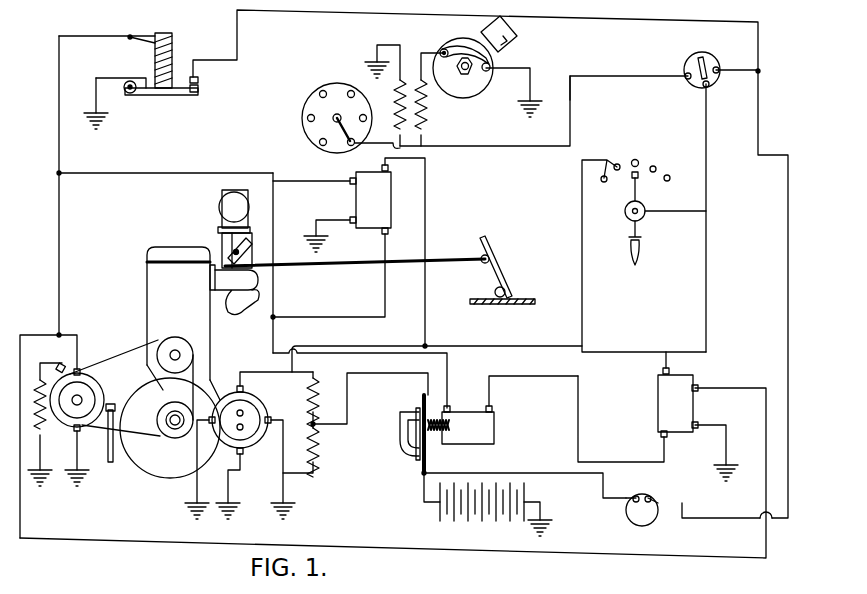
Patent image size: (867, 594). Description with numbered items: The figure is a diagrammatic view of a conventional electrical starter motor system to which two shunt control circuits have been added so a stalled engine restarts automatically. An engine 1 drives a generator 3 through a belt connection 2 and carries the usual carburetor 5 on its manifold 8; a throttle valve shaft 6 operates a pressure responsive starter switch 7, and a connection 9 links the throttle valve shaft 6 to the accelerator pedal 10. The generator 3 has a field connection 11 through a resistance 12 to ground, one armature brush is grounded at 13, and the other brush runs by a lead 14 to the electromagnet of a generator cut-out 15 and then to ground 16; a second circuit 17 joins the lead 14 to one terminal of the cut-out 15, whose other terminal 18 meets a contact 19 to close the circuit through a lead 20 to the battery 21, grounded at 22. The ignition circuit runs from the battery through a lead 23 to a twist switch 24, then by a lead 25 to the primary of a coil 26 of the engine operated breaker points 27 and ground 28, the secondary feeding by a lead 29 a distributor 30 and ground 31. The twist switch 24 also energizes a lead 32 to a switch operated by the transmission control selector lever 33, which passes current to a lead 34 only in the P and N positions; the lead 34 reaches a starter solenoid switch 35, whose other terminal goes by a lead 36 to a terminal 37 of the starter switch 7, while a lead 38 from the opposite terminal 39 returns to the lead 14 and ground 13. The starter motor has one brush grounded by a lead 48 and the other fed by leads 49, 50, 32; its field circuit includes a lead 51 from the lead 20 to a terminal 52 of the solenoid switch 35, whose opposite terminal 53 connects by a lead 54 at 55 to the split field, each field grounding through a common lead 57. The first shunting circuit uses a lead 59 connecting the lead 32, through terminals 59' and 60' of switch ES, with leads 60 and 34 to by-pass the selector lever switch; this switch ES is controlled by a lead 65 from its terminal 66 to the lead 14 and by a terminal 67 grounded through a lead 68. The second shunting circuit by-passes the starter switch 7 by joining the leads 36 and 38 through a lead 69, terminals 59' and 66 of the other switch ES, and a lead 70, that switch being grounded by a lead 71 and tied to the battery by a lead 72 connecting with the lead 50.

The engine 1 is at (147, 284).
The belt connection 2 is at (148, 350).
The generator 3 is at (78, 366).
The carburetor 5 is at (222, 193).
The throttle valve shaft 6 is at (226, 250).
The pressure responsive switch 7 is at (226, 244).
The manifold 8 is at (230, 296).
The connection 9 is at (462, 258).
The accelerator pedal 10 is at (507, 272).
The field connection 11 is at (58, 352).
The resistance 12 is at (40, 435).
The ground 13 is at (77, 465).
The lead 14 is at (58, 288).
The generator cut-out 15 is at (166, 98).
The ground 16 is at (104, 127).
The second circuit 17 is at (146, 92).
The terminal 18 is at (198, 93).
The contact 19 is at (200, 80).
The lead 20 is at (235, 34).
The battery 21 is at (480, 520).
The ground 22 is at (544, 518).
The lead 23 is at (718, 80).
The twist switch 24 is at (715, 60).
The lead 25 is at (650, 74).
The coil 26 is at (431, 126).
The breaker points 27 is at (443, 40).
The ground 28 is at (524, 102).
The lead 29 is at (424, 148).
The distributor 30 is at (323, 84).
The ground 31 is at (370, 61).
The lead 32 is at (706, 194).
The transmission control selector lever 33 is at (641, 230).
The lead 34 is at (582, 212).
The starter solenoid switch 35 is at (494, 436).
The lead 36 is at (273, 292).
The terminal 37 is at (270, 262).
The lead 38 is at (144, 174).
The terminal 39 is at (250, 240).
The lead 48 is at (228, 492).
The lead 49 is at (292, 392).
The lead 50 is at (565, 348).
The lead 51 is at (434, 454).
The terminal 52 is at (410, 464).
The terminal 53 is at (420, 400).
The lead 54 is at (382, 378).
The connection point 55 is at (313, 424).
The common lead 57 is at (283, 497).
The lead 59 is at (691, 393).
The terminal 59' is at (525, 266).
The lead 60 is at (618, 454).
The terminal 60' is at (470, 345).
The lead 65 is at (354, 546).
The terminal 66 is at (350, 170).
The terminal 67 is at (350, 236).
The lead 68 is at (726, 450).
The lead 69 is at (368, 319).
The lead 70 is at (290, 172).
The lead 71 is at (318, 240).
The lead 72 is at (426, 220).